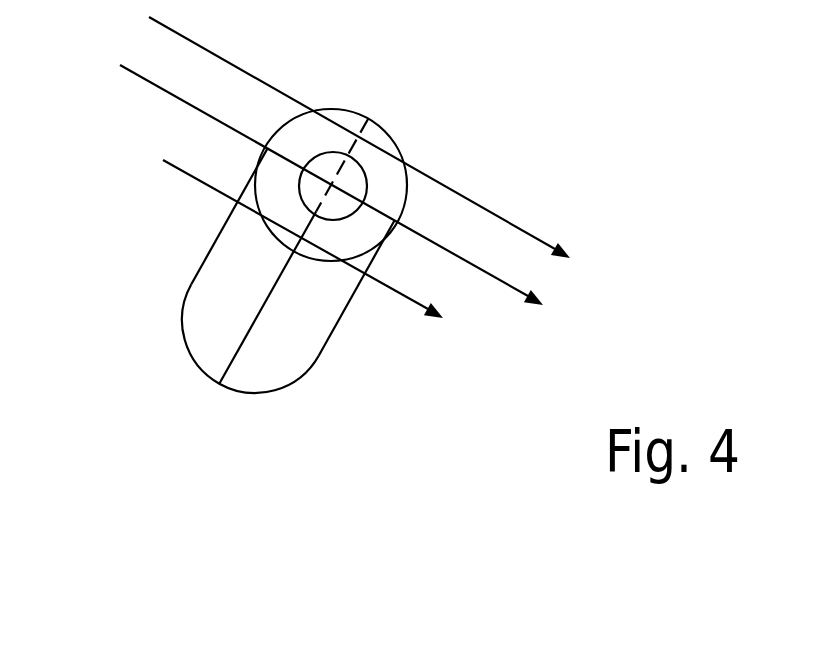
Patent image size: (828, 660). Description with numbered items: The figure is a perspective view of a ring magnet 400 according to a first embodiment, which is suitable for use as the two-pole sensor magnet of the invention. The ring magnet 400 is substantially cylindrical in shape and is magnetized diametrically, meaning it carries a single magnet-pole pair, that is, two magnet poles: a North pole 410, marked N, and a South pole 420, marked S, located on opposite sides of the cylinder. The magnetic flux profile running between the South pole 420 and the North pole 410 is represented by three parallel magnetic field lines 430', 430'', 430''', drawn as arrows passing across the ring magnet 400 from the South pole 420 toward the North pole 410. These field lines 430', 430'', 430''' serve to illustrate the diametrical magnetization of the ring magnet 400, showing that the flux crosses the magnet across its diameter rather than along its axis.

The ring magnet 400 is at (405, 123).
The North pole 410 is at (333, 338).
The South pole 420 is at (190, 256).
The magnetic field line 430' is at (390, 137).
The magnetic field line 430'' is at (395, 206).
The magnetic field line 430''' is at (253, 216).